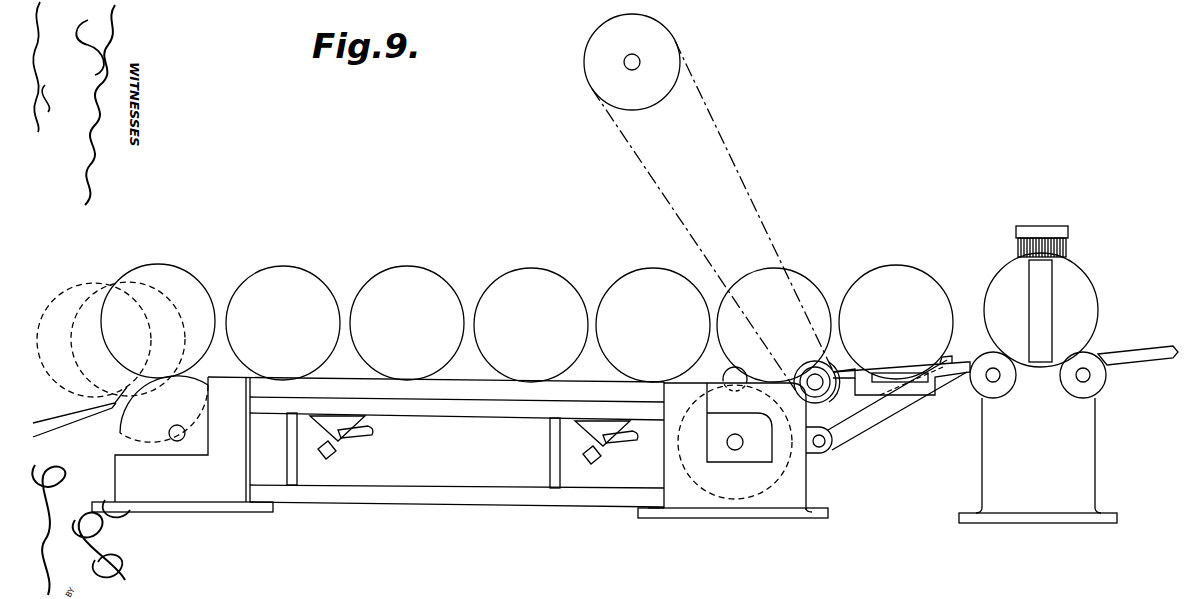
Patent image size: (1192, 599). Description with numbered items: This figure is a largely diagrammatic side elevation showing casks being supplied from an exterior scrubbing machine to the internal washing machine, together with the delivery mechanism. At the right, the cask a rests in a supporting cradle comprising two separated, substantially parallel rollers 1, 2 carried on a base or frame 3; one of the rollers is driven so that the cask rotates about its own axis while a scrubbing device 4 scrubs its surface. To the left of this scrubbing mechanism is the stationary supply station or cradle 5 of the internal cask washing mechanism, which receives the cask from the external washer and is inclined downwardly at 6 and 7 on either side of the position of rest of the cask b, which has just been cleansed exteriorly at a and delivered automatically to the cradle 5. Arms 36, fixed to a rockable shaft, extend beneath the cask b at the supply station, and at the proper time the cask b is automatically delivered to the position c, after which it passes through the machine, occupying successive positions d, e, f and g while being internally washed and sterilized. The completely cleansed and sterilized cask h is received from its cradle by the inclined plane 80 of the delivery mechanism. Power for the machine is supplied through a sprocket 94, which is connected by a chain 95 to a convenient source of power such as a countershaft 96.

The cask h is at (182, 273).
The roller g is at (318, 275).
The roller f is at (445, 277).
The roller e is at (565, 278).
The roller d is at (675, 275).
The cask position c is at (805, 275).
The cask b is at (938, 277).
The cask a is at (1097, 288).
The roller 1 is at (972, 388).
The roller 2 is at (1106, 390).
The base or frame 3 is at (981, 448).
The scrubbing device 4 is at (1063, 225).
The supply station or cradle 5 is at (920, 398).
The inclined portion of cradle 6 is at (955, 358).
The inclined portion of cradle 7 is at (848, 382).
The arm 36 is at (852, 438).
The inclined plane 80 is at (68, 428).
The sprocket 94 is at (808, 364).
The chain 95 is at (740, 173).
The countershaft 96 is at (640, 60).